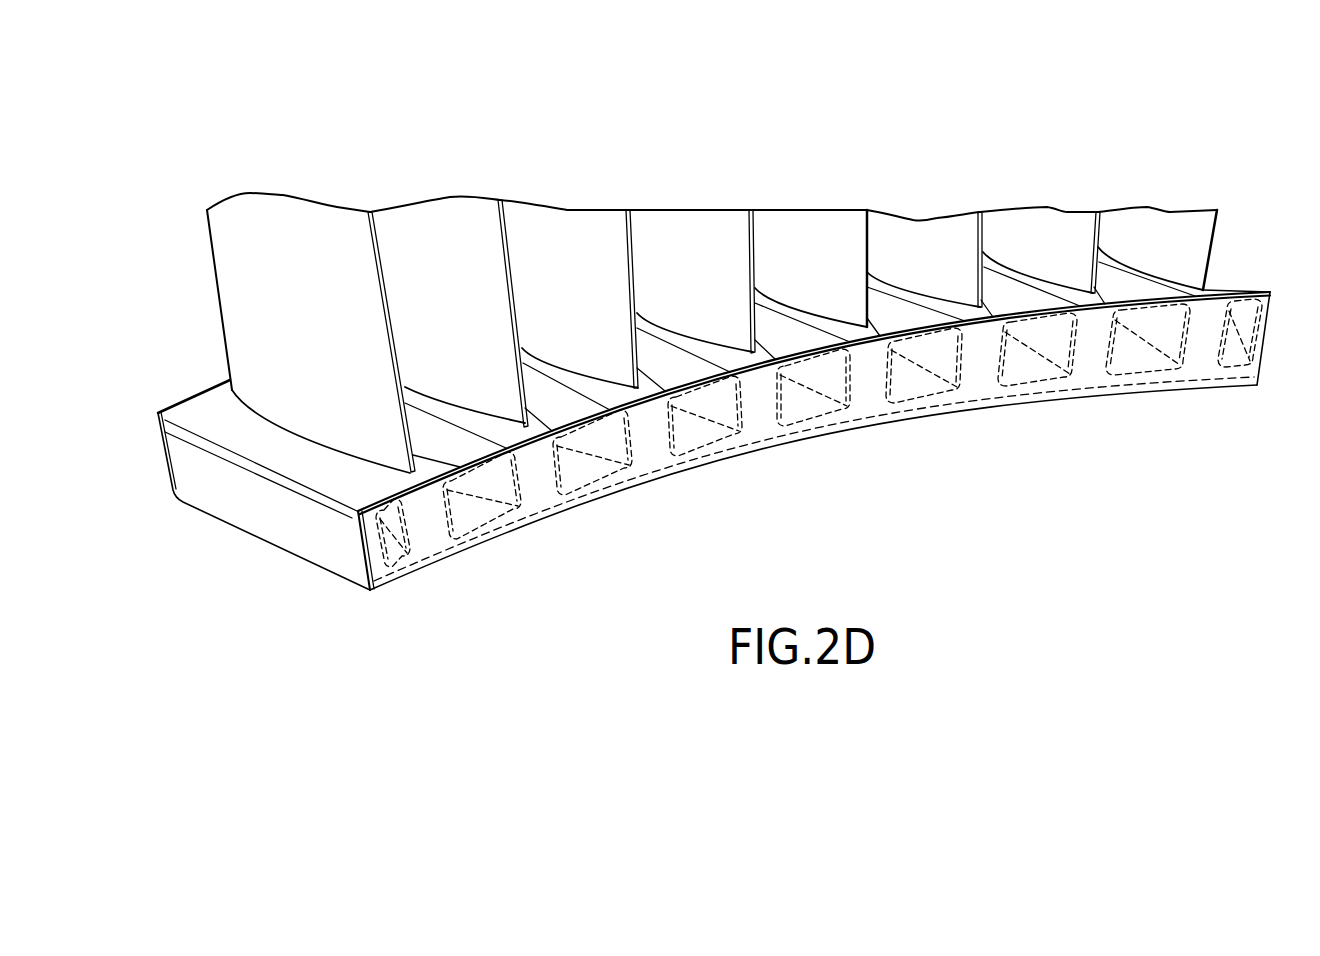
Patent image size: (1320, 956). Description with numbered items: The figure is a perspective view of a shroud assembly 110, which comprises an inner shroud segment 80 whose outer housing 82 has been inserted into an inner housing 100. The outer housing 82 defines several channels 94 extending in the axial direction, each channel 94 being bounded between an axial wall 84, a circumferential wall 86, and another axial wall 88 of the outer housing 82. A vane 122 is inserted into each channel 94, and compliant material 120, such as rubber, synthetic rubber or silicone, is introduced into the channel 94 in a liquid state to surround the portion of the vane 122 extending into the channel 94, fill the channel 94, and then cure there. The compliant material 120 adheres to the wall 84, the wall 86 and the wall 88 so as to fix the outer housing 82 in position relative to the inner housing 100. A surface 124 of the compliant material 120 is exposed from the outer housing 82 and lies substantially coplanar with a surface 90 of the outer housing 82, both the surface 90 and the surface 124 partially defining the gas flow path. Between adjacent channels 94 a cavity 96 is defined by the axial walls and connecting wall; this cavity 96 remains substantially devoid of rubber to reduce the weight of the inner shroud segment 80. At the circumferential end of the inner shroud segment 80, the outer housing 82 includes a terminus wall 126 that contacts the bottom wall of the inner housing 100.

The inner shroud segment 80 is at (360, 606).
The outer housing 82 is at (186, 412).
The axial wall 84 is at (388, 530).
The circumferential wall 86 is at (440, 563).
The axial wall 88 is at (450, 521).
The surface 90 is at (416, 415).
The channel 94 is at (755, 422).
The cavity 96 is at (690, 447).
The inner housing 100 is at (372, 593).
The shroud assembly 110 is at (294, 130).
The compliant material 120 is at (637, 458).
The vane 122 is at (340, 219).
The surface 124 is at (222, 398).
The terminus wall 126 is at (230, 505).